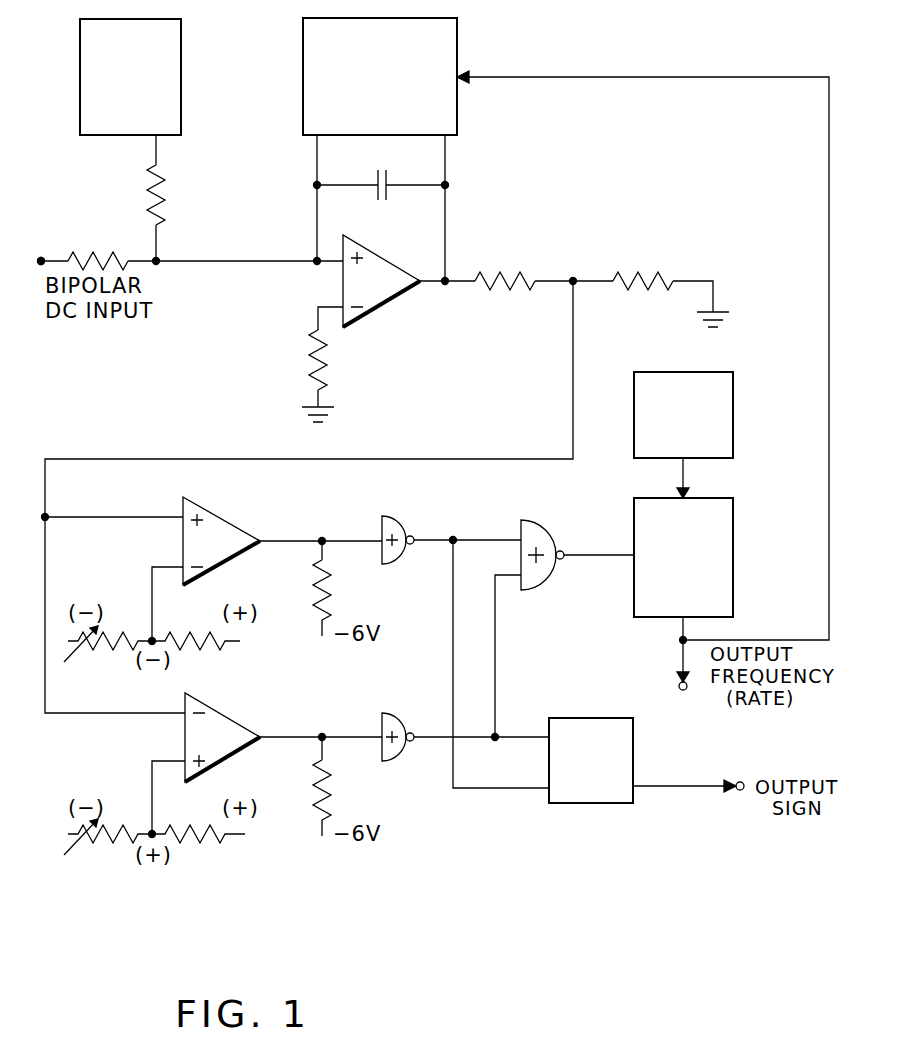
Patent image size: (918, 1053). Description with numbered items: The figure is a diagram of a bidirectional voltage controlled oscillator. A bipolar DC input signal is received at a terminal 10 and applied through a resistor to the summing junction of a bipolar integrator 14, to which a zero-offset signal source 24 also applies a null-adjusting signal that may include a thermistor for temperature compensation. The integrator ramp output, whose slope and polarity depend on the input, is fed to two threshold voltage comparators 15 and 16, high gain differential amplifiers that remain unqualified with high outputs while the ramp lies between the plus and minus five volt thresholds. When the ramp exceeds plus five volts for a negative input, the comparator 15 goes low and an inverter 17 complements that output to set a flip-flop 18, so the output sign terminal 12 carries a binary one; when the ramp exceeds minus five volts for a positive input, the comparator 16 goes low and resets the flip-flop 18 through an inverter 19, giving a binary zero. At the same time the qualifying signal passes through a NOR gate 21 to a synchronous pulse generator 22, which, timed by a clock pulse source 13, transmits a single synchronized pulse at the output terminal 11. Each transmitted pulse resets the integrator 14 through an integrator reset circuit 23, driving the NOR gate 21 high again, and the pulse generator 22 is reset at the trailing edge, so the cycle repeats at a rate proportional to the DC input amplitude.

The input terminal 10 is at (42, 257).
The output terminal 11 is at (678, 689).
The output sign terminal 12 is at (741, 781).
The clock pulse source 13 is at (733, 430).
The bipolar integrator 14 is at (386, 305).
The threshold voltage comparator 15 is at (218, 514).
The threshold voltage comparator 16 is at (222, 710).
The inverter 17 is at (402, 521).
The flip-flop 18 is at (602, 803).
The inverter 19 is at (398, 717).
The NOR gate 21 is at (547, 526).
The synchronous pulse generator 22 is at (735, 532).
The integrator reset circuit 23 is at (457, 46).
The zero-offset signal source 24 is at (181, 50).